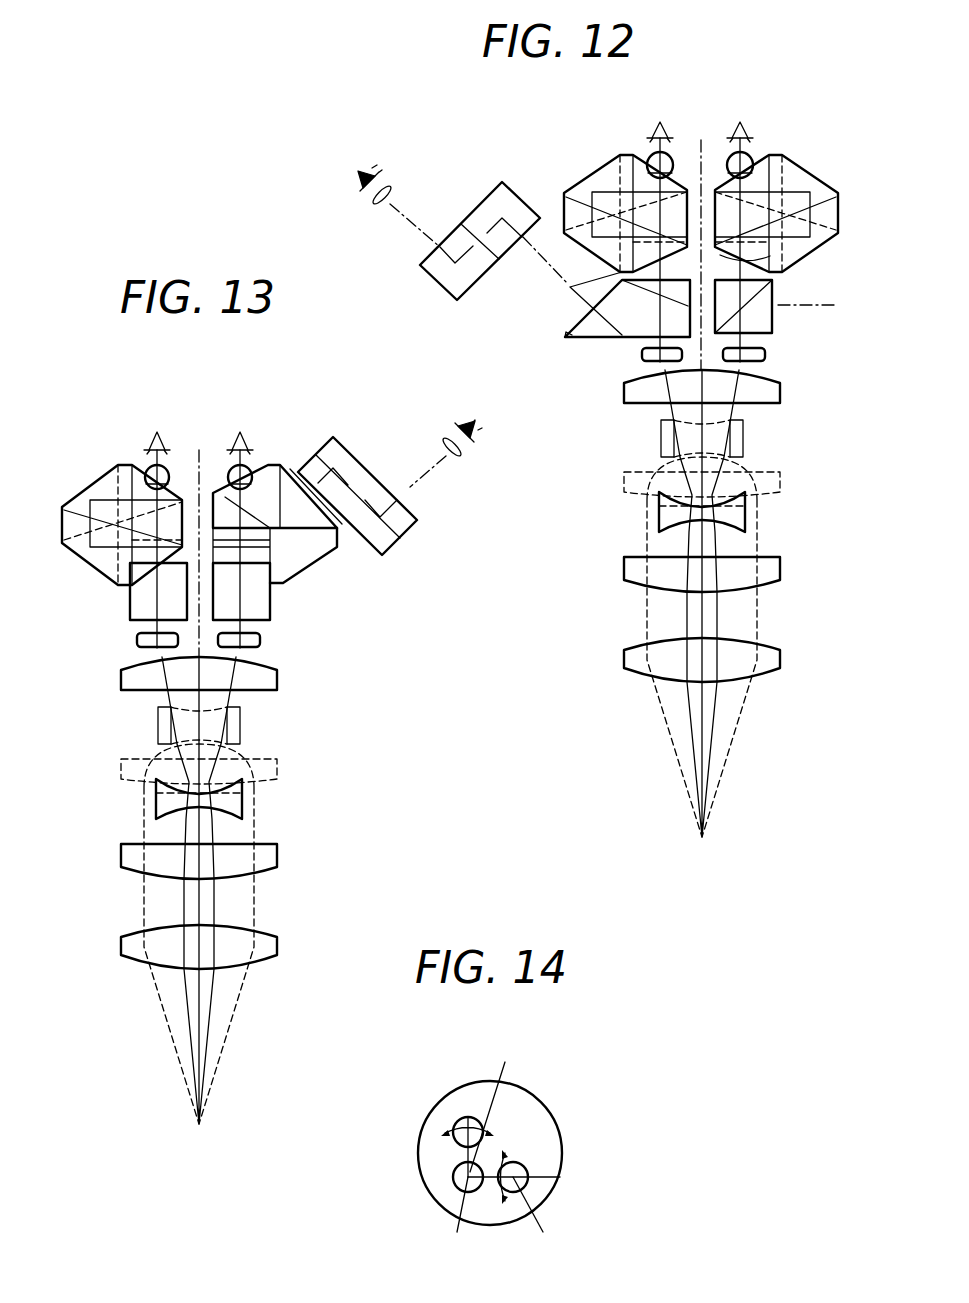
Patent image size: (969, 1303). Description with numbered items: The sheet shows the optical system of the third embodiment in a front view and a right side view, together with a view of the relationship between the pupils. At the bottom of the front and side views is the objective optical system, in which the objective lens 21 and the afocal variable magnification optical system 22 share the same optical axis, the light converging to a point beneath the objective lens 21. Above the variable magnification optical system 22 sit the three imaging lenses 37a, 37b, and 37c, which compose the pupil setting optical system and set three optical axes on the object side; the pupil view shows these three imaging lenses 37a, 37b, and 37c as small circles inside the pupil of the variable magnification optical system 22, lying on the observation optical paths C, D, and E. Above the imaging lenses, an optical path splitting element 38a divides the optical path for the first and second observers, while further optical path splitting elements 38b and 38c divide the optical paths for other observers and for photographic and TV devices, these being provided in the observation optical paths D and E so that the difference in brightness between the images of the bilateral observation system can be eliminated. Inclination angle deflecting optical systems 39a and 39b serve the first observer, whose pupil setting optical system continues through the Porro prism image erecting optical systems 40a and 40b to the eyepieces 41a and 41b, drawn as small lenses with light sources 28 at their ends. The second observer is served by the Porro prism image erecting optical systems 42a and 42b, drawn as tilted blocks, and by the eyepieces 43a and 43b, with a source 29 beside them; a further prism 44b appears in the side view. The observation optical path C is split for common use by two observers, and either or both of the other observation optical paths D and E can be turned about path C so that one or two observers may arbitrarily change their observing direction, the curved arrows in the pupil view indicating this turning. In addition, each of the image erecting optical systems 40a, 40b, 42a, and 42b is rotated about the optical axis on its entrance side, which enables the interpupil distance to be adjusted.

In FIG. 12, the objective lens 21 is at (777, 657).
In FIG. 13, the objective lens 21 is at (127, 948).
In FIG. 12, the afocal variable magnification optical system 22 is at (793, 373).
In FIG. 13, the afocal variable magnification optical system 22 is at (113, 875).
In FIG. 14, the afocal variable magnification optical system 22 is at (545, 1130).
In FIG. 12, the light source 28 is at (742, 120).
In FIG. 13, the light source 28 is at (479, 424).
In FIG. 12, the light source 29 is at (363, 163).
In FIG. 13, the light source 29 is at (238, 430).
In FIG. 12, the imaging lens 37a is at (641, 355).
In FIG. 14, the imaging lens 37a is at (457, 1178).
In FIG. 12, the imaging lens 37b is at (767, 356).
In FIG. 13, the imaging lens 37b is at (137, 639).
In FIG. 14, the imaging lens 37b is at (528, 1177).
In FIG. 13, the imaging lens 37c is at (261, 641).
In FIG. 14, the imaging lens 37c is at (462, 1117).
In FIG. 12, the optical path splitting element 38a is at (577, 333).
In FIG. 12, the optical path splitting element 38b is at (765, 324).
In FIG. 13, the optical path splitting element 38b is at (135, 608).
In FIG. 13, the optical path splitting element 38c is at (260, 608).
In FIG. 12, the inclination angle deflecting optical system 39a is at (572, 289).
In FIG. 12, the inclination angle deflecting optical system 39b is at (803, 252).
In FIG. 13, the inclination angle deflecting optical system 39b is at (283, 471).
In FIG. 12, the image erecting optical system 40a is at (598, 174).
In FIG. 12, the image erecting optical system 40b is at (800, 174).
In FIG. 13, the image erecting optical system 40b is at (402, 525).
In FIG. 12, the eyepiece 41a is at (686, 146).
In FIG. 12, the eyepiece 41b is at (748, 160).
In FIG. 13, the eyepiece 41b is at (462, 457).
In FIG. 13, the image erecting optical system 42a is at (312, 553).
In FIG. 12, the image erecting optical system 42b is at (450, 289).
In FIG. 13, the eyepiece 43a is at (230, 470).
In FIG. 13, the eyepiece 43b is at (148, 470).
In FIG. 13, the prism 44b is at (75, 543).
In FIG. 14, the observation optical path C is at (459, 1223).
In FIG. 14, the observation optical path D is at (534, 1218).
In FIG. 14, the observation optical path E is at (496, 1104).